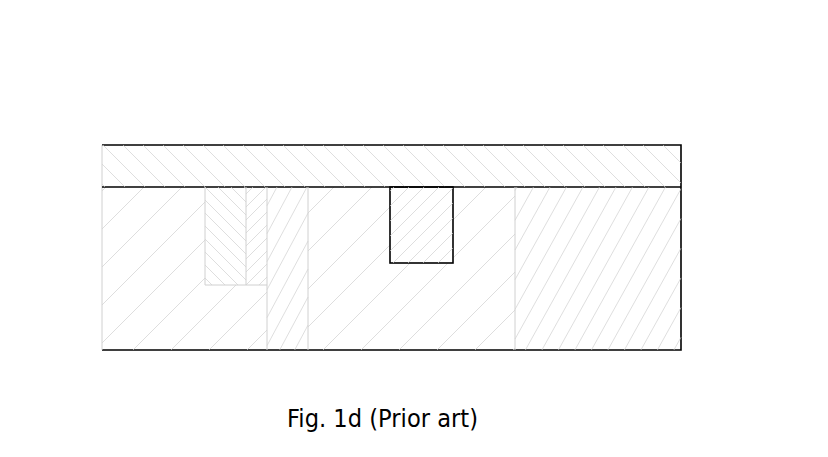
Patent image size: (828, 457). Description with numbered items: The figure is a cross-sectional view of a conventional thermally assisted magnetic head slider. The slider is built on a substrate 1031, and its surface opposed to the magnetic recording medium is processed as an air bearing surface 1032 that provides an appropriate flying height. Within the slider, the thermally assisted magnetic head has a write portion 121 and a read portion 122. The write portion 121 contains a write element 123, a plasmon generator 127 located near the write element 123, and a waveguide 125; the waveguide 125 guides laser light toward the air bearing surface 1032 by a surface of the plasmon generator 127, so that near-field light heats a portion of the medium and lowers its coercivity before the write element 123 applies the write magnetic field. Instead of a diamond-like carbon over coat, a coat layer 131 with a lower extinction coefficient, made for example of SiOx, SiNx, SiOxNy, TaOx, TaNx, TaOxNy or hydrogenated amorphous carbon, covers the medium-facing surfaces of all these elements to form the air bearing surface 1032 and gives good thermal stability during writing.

The write portion 121 is at (335, 53).
The write element 123 is at (223, 203).
The plasmon generator 127 is at (258, 198).
The waveguide 125 is at (288, 197).
The read portion 122 is at (420, 200).
The coat layer 131 is at (518, 167).
The substrate 1031 is at (598, 218).
The air bearing surface 1032 is at (710, 193).